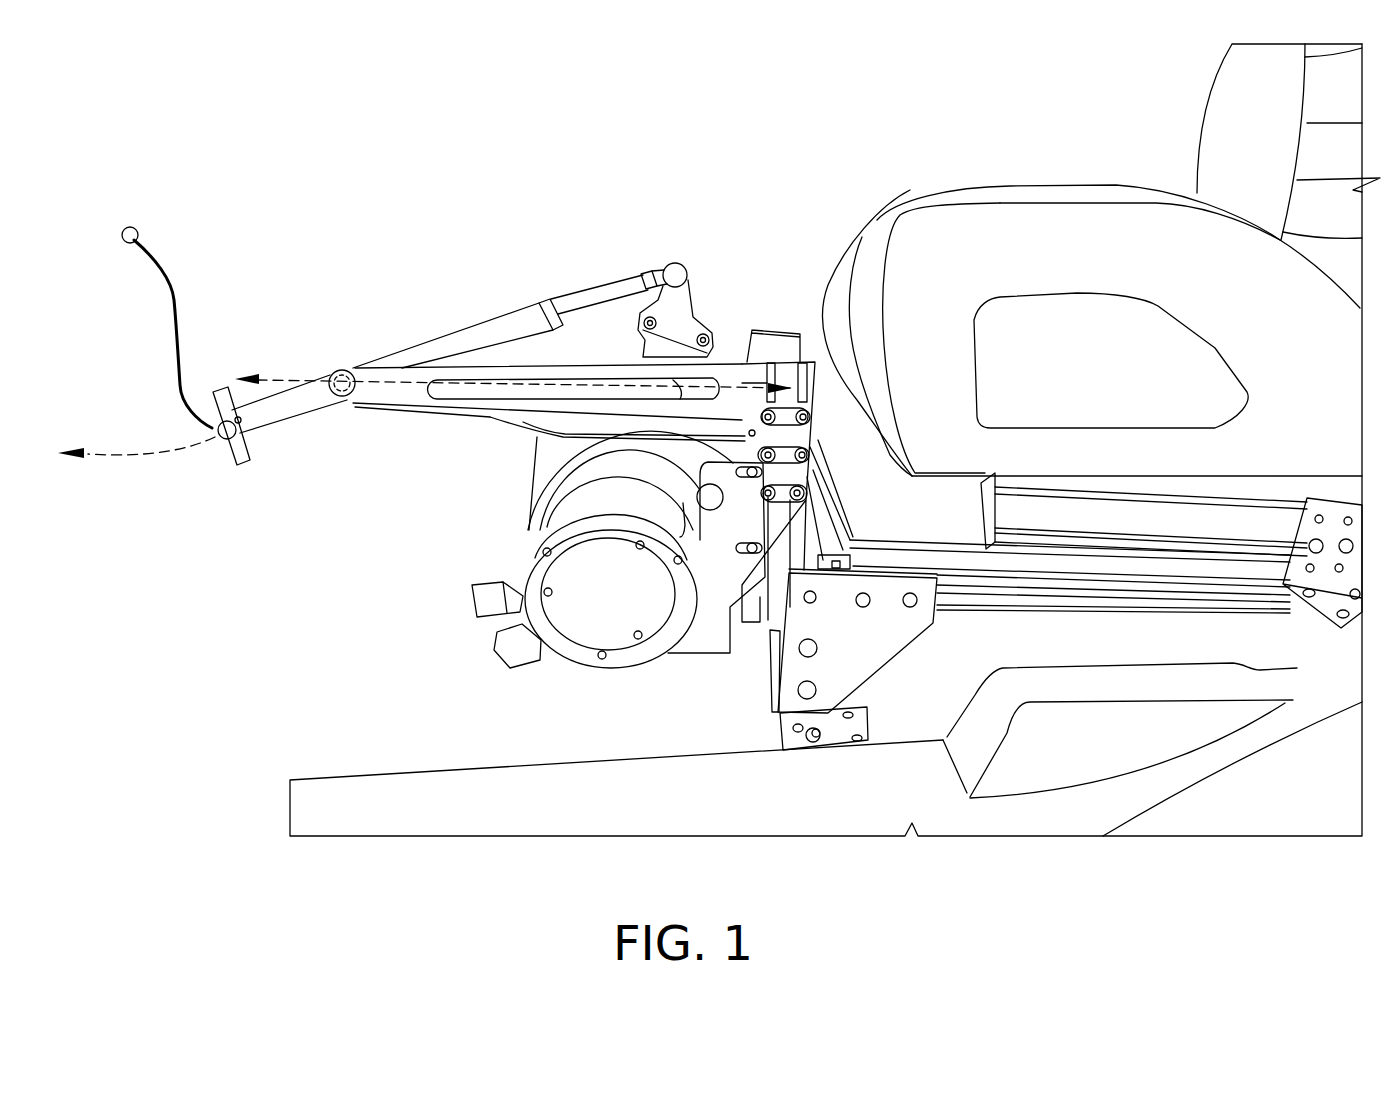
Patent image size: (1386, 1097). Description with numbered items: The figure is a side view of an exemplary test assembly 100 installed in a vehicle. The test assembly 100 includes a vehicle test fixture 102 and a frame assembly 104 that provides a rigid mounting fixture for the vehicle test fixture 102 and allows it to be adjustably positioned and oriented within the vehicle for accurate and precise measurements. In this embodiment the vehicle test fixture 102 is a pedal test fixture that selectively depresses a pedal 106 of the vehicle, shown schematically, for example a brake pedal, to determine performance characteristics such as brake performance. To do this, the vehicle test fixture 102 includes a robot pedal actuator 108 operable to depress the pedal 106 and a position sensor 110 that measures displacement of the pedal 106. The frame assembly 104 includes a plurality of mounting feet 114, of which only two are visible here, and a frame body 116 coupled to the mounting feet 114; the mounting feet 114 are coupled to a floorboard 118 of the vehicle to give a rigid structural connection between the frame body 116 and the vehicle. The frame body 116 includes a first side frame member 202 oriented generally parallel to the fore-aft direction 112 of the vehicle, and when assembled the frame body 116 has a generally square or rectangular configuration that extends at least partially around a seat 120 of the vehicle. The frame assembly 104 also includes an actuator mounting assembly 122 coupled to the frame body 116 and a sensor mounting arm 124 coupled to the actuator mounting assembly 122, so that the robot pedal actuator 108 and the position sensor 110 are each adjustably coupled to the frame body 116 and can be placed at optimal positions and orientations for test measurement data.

The test assembly 100 is at (631, 206).
The vehicle test fixture 102 is at (478, 300).
The frame assembly 104 is at (958, 436).
The pedal 106 is at (223, 460).
The robot pedal actuator 108 is at (549, 669).
The position sensor 110 is at (339, 406).
The fore-aft direction 112 is at (398, 363).
The mounting feet 114 is at (789, 754).
The frame body 116 is at (1178, 466).
The floorboard 118 is at (732, 745).
The seat 120 is at (976, 197).
The actuator mounting assembly 122 is at (813, 352).
The sensor mounting arm 124 is at (541, 420).
The first side frame member 202 is at (1073, 610).